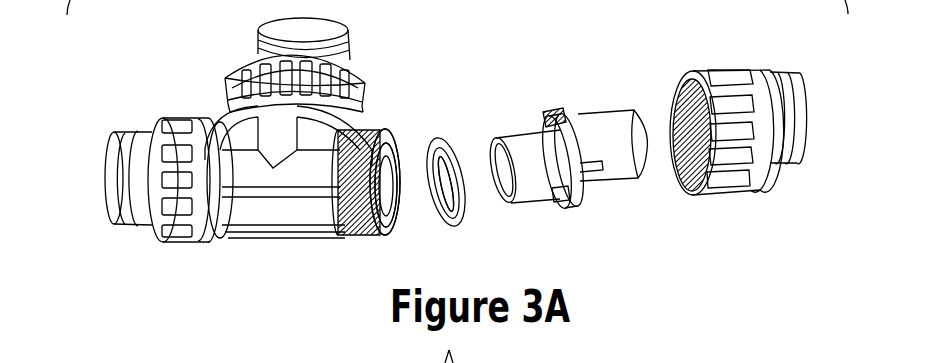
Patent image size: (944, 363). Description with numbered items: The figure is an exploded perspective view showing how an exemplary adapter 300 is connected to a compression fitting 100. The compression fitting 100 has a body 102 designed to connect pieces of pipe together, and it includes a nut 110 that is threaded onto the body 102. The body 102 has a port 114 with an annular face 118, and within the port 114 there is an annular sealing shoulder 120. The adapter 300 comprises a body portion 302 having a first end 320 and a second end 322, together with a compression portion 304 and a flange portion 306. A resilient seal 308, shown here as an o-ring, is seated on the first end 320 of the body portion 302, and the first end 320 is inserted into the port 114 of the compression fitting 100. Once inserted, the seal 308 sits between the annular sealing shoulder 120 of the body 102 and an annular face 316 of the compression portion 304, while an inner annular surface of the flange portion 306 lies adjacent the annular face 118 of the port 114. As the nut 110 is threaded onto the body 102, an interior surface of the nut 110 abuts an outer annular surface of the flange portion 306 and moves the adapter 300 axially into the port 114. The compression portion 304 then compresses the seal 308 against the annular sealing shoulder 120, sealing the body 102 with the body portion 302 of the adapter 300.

The compression fitting 100 is at (408, 75).
The body 102 is at (285, 249).
The nut 110 is at (776, 58).
The port 114 is at (396, 153).
The annular face 118 is at (391, 218).
The annular sealing shoulder 120 is at (395, 203).
The adapter 300 is at (623, 90).
The body portion 302 is at (523, 127).
The compression portion 304 is at (570, 180).
The flange portion 306 is at (558, 97).
The resilient seal 308 is at (473, 236).
The annular face 316 is at (543, 118).
The first end 320 is at (535, 209).
The second end 322 is at (640, 183).